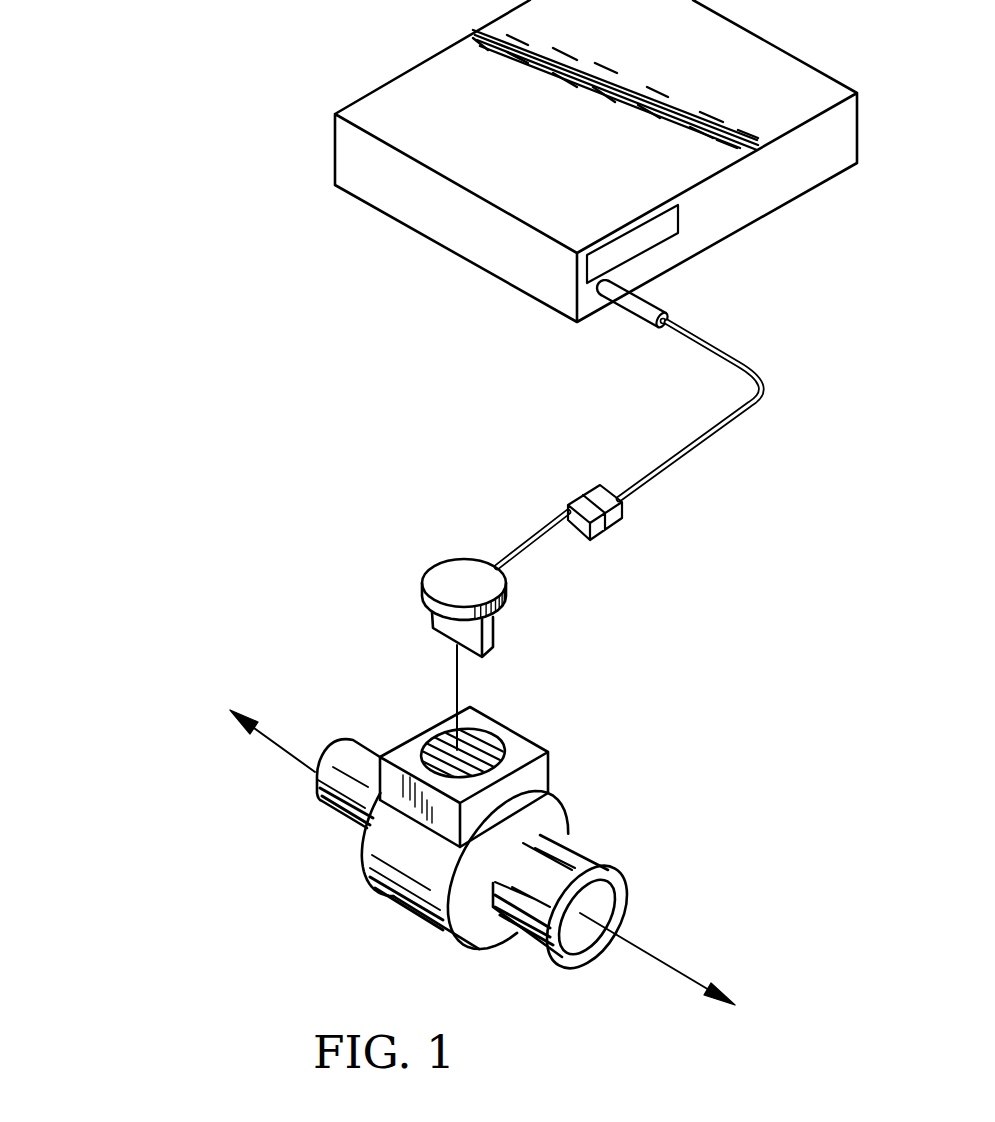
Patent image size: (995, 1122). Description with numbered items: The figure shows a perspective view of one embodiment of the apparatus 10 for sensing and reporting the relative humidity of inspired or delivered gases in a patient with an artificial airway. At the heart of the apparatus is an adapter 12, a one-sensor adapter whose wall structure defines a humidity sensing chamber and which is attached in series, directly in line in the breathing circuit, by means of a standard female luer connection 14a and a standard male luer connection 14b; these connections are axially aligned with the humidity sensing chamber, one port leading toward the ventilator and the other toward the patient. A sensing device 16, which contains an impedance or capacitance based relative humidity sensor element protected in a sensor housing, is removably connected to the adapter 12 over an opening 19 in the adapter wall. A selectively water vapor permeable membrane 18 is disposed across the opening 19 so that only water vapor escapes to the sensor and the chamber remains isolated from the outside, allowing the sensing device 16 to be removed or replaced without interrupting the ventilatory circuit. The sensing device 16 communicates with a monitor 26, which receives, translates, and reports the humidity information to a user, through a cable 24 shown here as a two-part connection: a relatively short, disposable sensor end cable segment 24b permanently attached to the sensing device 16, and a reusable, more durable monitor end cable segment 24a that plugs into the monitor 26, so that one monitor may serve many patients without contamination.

The apparatus 10 is at (282, 386).
The adapter 12 is at (436, 854).
The female luer connection 14a is at (583, 937).
The male luer connection 14b is at (315, 793).
The sensing device 16 is at (490, 633).
The membrane 18 is at (453, 748).
The opening 19 is at (500, 738).
The cable 24 is at (635, 444).
The monitor end cable segment 24a is at (717, 440).
The sensor end cable segment 24b is at (545, 533).
The monitor 26 is at (857, 115).